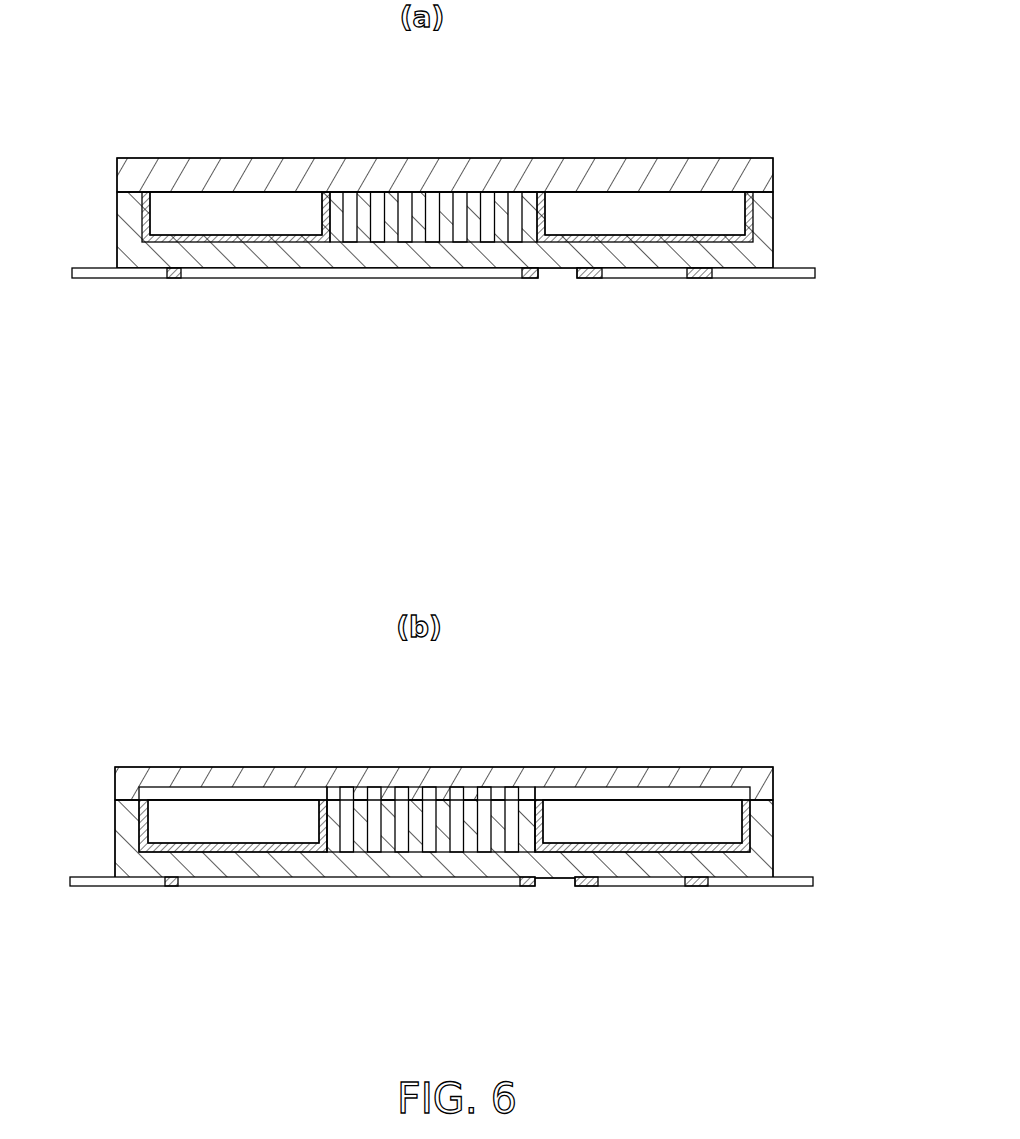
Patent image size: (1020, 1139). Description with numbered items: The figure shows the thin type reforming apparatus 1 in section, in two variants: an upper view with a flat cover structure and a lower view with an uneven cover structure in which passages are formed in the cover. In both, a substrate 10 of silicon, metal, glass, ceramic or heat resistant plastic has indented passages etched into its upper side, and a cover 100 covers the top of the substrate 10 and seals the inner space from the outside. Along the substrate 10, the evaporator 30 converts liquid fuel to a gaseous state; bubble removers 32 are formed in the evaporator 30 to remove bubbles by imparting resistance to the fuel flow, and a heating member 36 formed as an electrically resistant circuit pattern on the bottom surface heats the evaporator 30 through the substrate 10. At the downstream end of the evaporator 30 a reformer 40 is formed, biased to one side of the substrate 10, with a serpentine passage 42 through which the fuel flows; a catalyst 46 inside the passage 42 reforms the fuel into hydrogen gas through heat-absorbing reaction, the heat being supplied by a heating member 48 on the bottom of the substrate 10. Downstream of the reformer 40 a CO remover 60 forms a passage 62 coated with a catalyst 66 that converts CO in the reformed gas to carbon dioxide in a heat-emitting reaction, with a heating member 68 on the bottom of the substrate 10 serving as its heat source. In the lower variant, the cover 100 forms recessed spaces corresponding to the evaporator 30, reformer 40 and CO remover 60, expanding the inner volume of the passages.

The thin type reforming apparatus 1 is at (760, 124).
The substrate 10 is at (768, 240).
The cover 100 is at (328, 168).
The evaporator 30 is at (490, 192).
The bubble removers 32 is at (470, 200).
The heating member 36 is at (411, 276).
The reformer 40 is at (188, 203).
The passage 42 is at (254, 208).
The catalyst 46 is at (148, 213).
The heating member 48 is at (203, 274).
The CO remover 60 is at (697, 208).
The passage 62 is at (645, 208).
The catalyst 66 is at (543, 213).
The heating member 68 is at (748, 282).